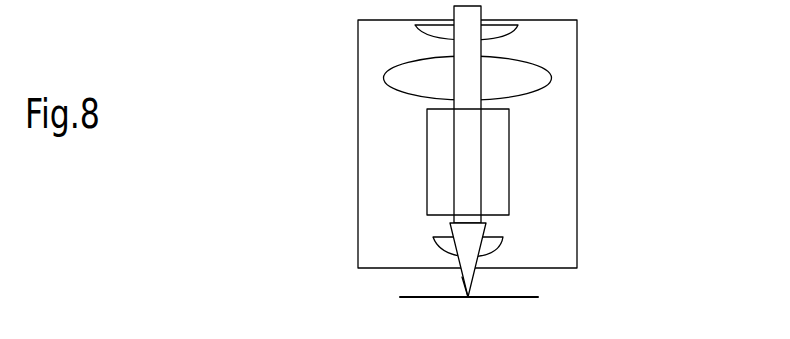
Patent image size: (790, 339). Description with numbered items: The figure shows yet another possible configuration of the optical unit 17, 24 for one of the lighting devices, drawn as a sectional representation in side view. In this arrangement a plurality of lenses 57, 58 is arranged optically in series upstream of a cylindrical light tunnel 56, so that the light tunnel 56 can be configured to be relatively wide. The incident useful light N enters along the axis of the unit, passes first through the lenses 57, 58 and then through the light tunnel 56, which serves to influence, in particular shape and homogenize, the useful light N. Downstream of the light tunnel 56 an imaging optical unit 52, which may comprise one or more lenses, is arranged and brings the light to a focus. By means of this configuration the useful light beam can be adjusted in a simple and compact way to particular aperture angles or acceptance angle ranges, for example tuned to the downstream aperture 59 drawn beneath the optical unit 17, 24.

The optical unit 17 is at (534, 144).
The optical unit 24 is at (610, 83).
The imaging optical unit 52 is at (503, 248).
The cylindrical light tunnel 56 is at (509, 171).
The lens 57 is at (457, 36).
The lens 58 is at (430, 100).
The aperture 59 is at (531, 297).
The useful light N is at (462, 277).